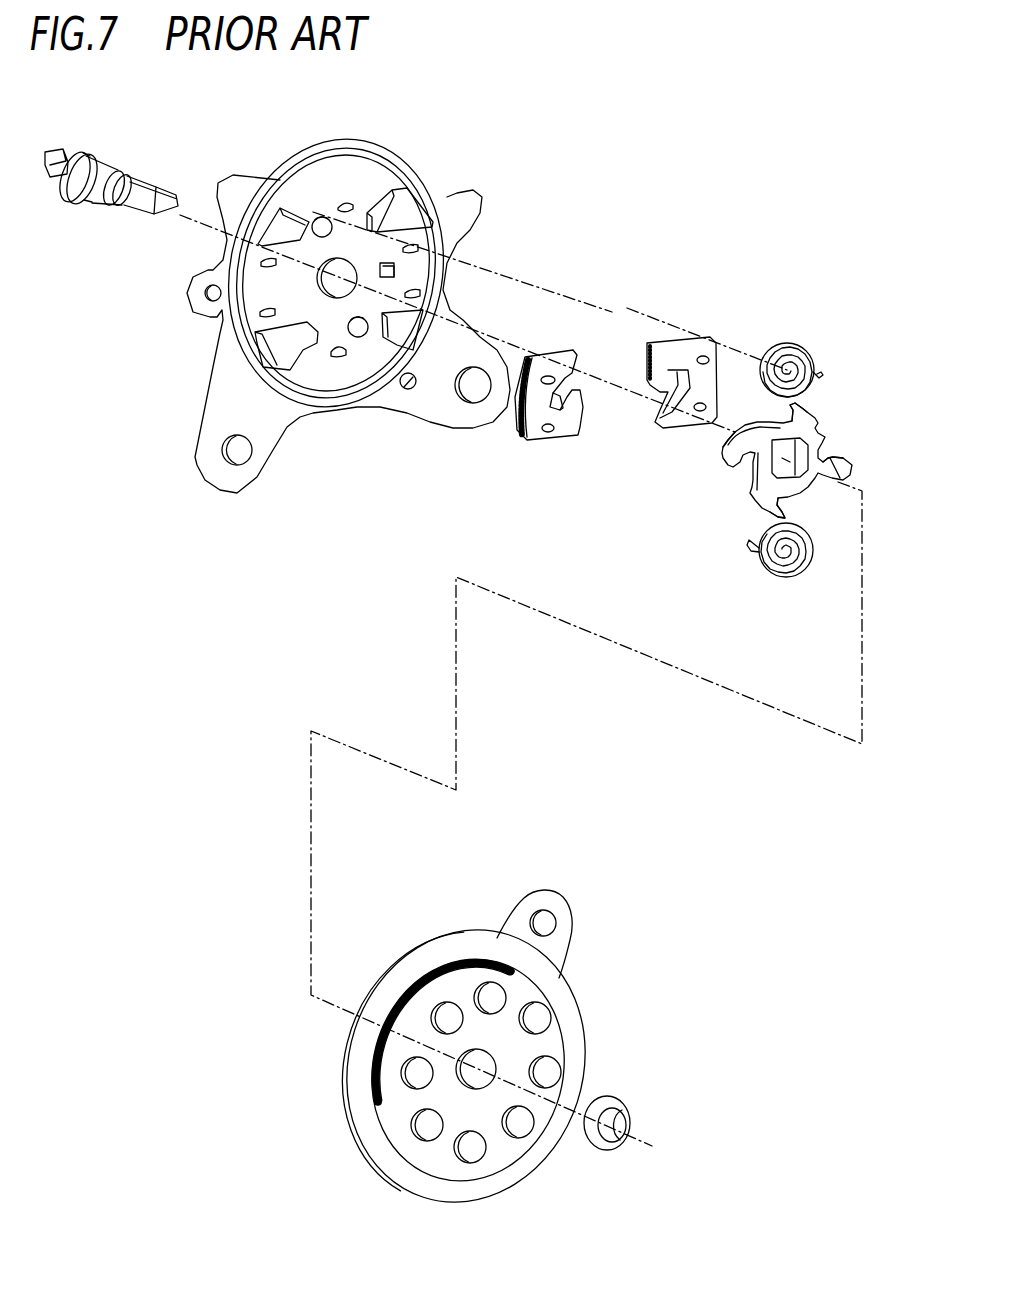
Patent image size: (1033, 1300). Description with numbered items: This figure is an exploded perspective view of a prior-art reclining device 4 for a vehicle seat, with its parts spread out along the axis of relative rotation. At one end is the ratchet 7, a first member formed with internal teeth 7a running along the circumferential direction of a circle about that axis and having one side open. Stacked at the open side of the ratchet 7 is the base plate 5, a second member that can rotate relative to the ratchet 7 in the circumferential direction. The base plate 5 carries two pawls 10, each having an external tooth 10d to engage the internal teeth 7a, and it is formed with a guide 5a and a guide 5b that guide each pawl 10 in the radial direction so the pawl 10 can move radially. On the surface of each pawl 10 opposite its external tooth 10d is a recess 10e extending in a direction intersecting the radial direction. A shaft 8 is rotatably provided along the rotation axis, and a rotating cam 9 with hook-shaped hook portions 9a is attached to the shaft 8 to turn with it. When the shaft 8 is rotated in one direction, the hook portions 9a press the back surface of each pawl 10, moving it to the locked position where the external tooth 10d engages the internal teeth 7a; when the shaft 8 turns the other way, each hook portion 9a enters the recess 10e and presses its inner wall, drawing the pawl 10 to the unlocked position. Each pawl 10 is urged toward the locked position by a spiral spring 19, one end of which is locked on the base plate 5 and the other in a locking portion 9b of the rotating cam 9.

The reclining device 4 is at (609, 386).
The base plate 5 is at (323, 407).
The guide 5a is at (405, 200).
The guide 5b is at (280, 225).
The ratchet 7 is at (469, 1061).
The internal teeth 7a is at (387, 1133).
The shaft 8 is at (82, 178).
The rotating cam 9 is at (795, 457).
The hook portions 9a is at (840, 460).
The locking portion 9b is at (813, 410).
The pawl 10 is at (533, 428).
The external tooth 10d is at (522, 438).
The recess 10e is at (560, 396).
The spiral spring 19 is at (797, 357).